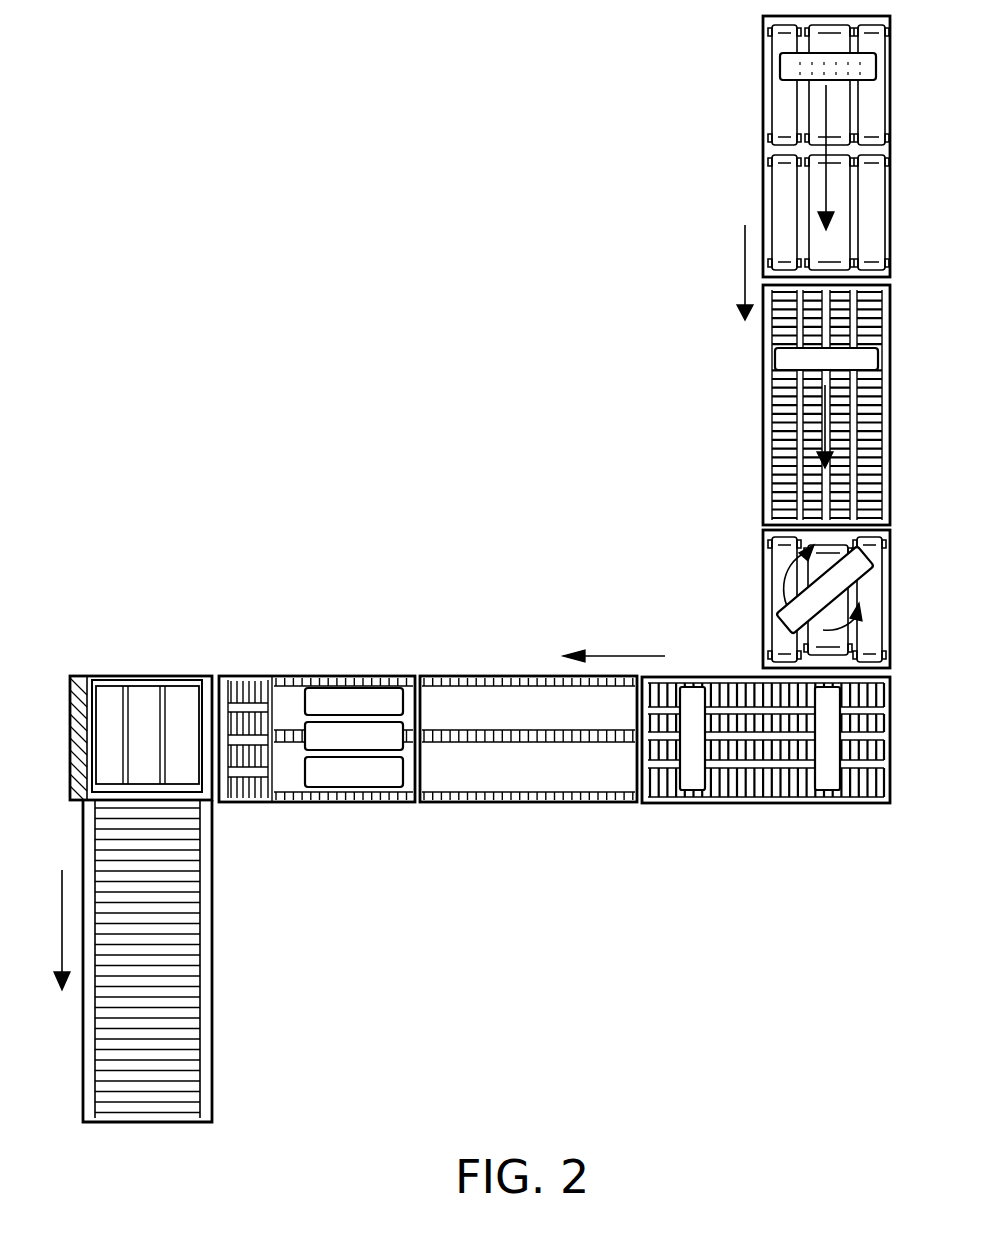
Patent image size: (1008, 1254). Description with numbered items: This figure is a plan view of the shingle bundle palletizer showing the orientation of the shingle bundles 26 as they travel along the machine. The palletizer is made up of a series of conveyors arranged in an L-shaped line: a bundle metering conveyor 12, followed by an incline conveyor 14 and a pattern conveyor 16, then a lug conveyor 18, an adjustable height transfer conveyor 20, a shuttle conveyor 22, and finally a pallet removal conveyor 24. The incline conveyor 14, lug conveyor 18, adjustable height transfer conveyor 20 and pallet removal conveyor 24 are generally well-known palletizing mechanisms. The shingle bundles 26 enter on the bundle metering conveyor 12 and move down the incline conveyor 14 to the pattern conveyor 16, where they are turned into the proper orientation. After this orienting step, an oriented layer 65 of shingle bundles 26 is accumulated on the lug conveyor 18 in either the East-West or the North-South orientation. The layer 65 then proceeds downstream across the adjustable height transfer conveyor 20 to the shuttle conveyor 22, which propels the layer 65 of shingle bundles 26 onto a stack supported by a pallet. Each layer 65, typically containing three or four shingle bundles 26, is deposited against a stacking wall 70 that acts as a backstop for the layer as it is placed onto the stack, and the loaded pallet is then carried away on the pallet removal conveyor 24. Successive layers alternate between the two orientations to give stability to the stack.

The bundle metering conveyor 12 is at (763, 120).
The incline conveyor 14 is at (763, 403).
The pattern conveyor 16 is at (763, 613).
The lug conveyor 18 is at (712, 803).
The adjustable height transfer conveyor 20 is at (480, 803).
The shuttle conveyor 22 is at (283, 803).
The pallet removal conveyor 24 is at (213, 1033).
The shingle bundles 26 is at (782, 45).
The oriented layer of shingle bundles 65 is at (305, 645).
The stacking wall 70 is at (72, 688).